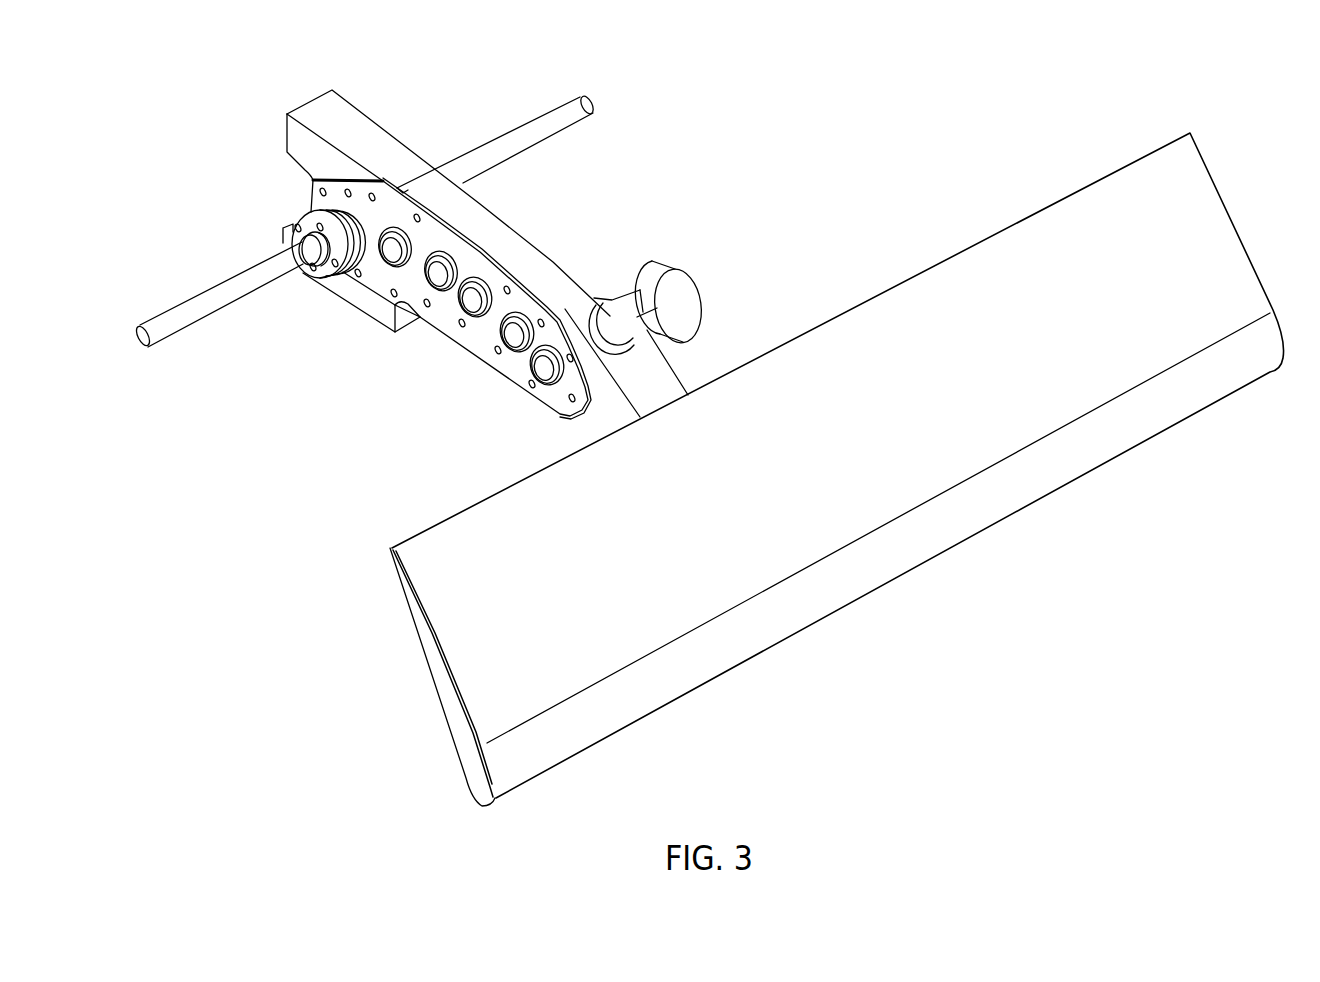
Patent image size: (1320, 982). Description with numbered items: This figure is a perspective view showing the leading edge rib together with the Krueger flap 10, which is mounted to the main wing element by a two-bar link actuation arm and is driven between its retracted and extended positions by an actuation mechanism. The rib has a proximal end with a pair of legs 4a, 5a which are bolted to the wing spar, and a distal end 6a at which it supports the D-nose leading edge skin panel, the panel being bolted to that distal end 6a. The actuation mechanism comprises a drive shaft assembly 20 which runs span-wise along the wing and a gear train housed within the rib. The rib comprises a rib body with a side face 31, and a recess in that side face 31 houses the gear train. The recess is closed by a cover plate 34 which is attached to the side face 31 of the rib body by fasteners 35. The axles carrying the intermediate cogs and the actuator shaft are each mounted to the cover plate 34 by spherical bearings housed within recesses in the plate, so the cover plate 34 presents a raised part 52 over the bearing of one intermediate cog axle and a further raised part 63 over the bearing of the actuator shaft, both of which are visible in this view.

The flap 10 is at (433, 667).
The leg 4a is at (287, 130).
The leg 5a is at (281, 232).
The drive shaft assembly 20 is at (212, 313).
The side face 31 is at (370, 307).
The cover plate 34 is at (480, 337).
The fasteners 35 is at (450, 328).
The raised part 52 is at (515, 338).
The raised part 63 is at (533, 370).
The distal end 6a is at (610, 407).